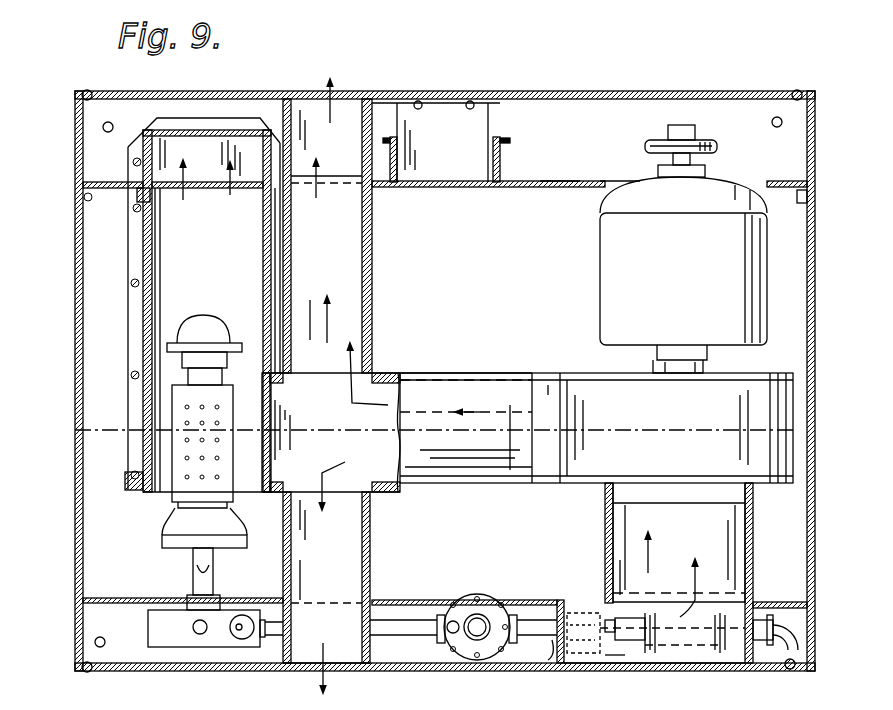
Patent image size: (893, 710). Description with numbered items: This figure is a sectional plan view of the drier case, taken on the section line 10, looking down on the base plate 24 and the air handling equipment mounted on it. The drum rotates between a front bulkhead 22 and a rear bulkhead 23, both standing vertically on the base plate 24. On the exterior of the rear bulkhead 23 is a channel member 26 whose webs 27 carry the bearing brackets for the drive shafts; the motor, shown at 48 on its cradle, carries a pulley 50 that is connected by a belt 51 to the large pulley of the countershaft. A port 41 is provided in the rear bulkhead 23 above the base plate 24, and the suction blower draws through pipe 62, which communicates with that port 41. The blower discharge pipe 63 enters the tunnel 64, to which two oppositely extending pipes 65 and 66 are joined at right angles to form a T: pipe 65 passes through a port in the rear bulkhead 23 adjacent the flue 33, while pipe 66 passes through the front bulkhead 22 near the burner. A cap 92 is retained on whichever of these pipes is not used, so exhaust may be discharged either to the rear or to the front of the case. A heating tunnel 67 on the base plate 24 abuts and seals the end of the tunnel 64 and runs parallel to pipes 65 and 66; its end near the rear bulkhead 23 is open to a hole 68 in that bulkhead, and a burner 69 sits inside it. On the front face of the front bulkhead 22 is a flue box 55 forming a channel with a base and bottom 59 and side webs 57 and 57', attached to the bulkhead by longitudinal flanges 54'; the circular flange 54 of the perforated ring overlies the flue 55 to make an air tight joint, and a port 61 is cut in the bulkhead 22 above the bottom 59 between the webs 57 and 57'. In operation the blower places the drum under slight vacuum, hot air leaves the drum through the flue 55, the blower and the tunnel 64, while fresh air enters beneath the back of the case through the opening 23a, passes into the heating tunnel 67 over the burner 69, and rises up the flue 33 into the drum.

The section line 10 is at (75, 430).
The front wall or bulkhead 22 is at (420, 603).
The rear wall or bulkhead 23 is at (560, 182).
The opening 23a is at (622, 160).
The base plate 24 is at (490, 296).
The channel member 26 is at (435, 182).
The webs 27 is at (499, 140).
The flue 33 is at (172, 142).
The port 41 is at (640, 597).
The tank 48 is at (603, 262).
The pulley 50 is at (648, 138).
The belt 51 is at (718, 148).
The circular flange 54 is at (541, 614).
The longitudinal flanges 54' is at (780, 579).
The flue box 55 is at (679, 651).
The web 57 is at (555, 656).
The web 57' is at (771, 657).
The base and bottom 59 is at (613, 663).
The port 61 is at (709, 433).
The pipe 62 is at (603, 557).
The discharge pipe 63 is at (557, 387).
The tunnel 64 is at (388, 377).
The pipe 65 is at (362, 268).
The pipe 66 is at (358, 542).
The heating tunnel 67 is at (158, 302).
The hole 68 is at (152, 213).
The burner 69 is at (183, 493).
The cap 92 is at (300, 667).